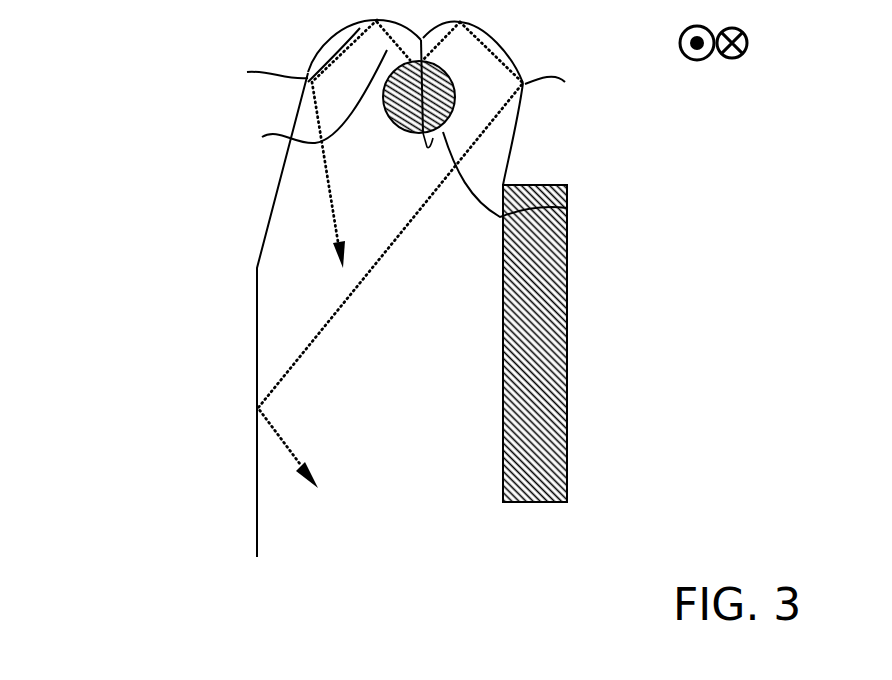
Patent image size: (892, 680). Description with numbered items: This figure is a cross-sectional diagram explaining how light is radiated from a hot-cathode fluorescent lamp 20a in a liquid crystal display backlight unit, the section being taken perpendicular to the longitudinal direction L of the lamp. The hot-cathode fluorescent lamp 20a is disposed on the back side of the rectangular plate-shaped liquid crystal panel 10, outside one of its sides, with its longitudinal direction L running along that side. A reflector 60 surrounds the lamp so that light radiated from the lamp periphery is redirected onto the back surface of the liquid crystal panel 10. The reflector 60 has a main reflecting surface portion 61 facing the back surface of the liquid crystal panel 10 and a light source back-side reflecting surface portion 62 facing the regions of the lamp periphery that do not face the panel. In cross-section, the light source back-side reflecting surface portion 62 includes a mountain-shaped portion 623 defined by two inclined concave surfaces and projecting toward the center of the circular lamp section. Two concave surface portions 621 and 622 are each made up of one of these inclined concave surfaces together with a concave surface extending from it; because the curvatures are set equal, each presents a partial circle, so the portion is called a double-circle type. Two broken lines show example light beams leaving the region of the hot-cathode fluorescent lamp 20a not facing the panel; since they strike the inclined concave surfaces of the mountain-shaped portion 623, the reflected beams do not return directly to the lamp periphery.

The liquid crystal panel 10 is at (567, 400).
The hot-cathode fluorescent lamp 20a is at (567, 208).
The reflector 60 is at (237, 382).
The main reflecting surface portion 61 is at (258, 513).
The light source back-side reflecting surface portion 62 is at (262, 137).
The concave surface portion 621 is at (247, 72).
The concave surface portion 622 is at (565, 82).
The mountain-shaped portion 623 is at (438, 133).
The longitudinal direction L is at (730, 68).